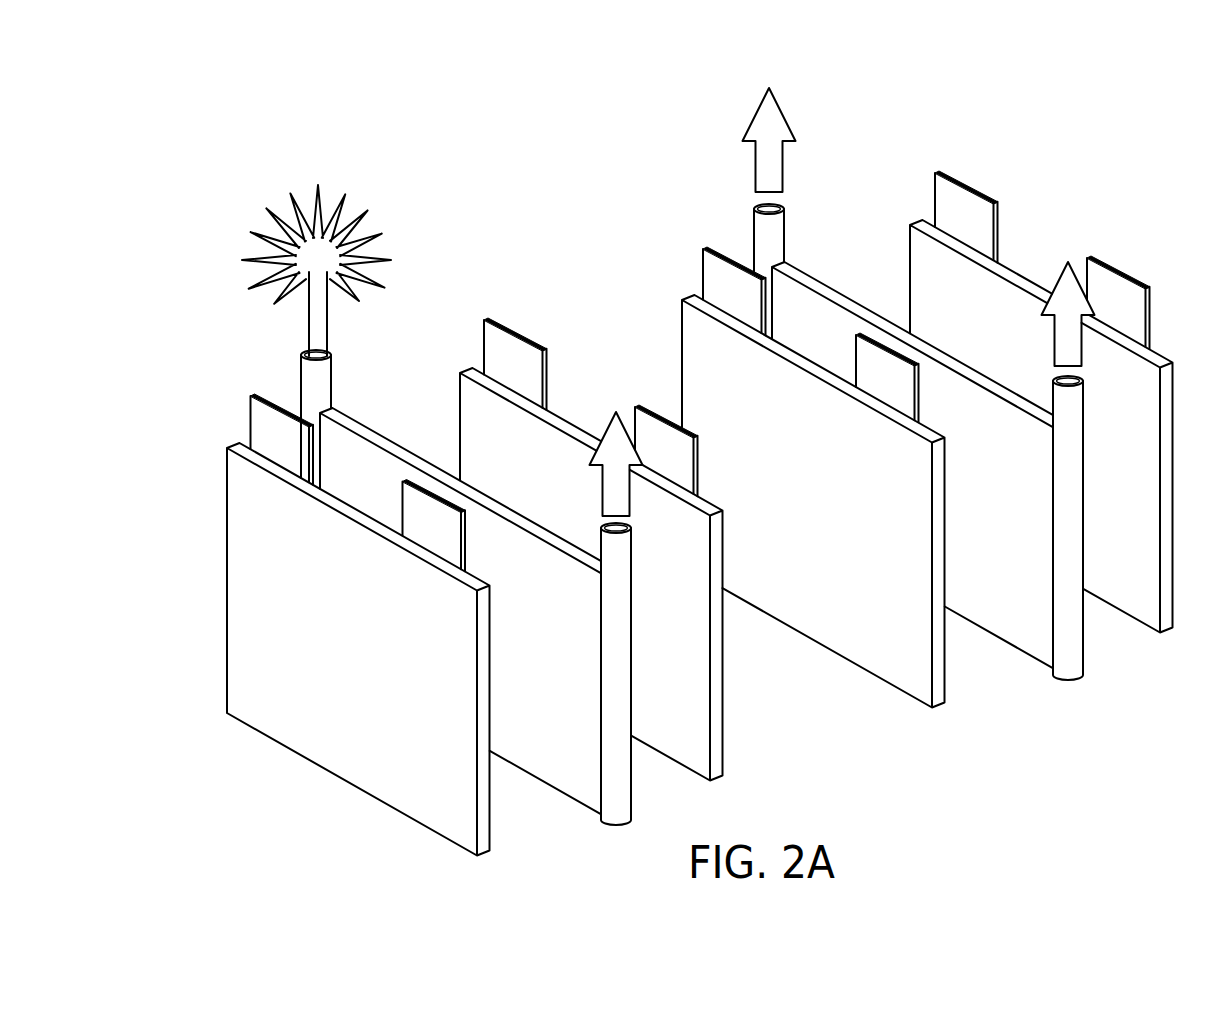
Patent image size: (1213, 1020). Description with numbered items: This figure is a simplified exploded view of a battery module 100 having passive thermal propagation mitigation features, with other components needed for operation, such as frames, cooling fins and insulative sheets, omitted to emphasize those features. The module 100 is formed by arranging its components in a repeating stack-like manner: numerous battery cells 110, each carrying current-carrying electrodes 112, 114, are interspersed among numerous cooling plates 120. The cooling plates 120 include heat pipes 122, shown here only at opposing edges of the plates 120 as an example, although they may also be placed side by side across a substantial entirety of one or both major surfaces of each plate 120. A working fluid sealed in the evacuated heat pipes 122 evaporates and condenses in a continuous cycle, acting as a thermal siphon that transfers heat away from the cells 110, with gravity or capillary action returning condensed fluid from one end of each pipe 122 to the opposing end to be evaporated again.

The battery module 100 is at (405, 112).
The battery cell 110 is at (236, 494).
The current-carrying electrode 112 is at (965, 200).
The current-carrying electrode 114 is at (1118, 289).
The cooling plate 120 is at (1022, 638).
The heat pipe 122 is at (760, 233).